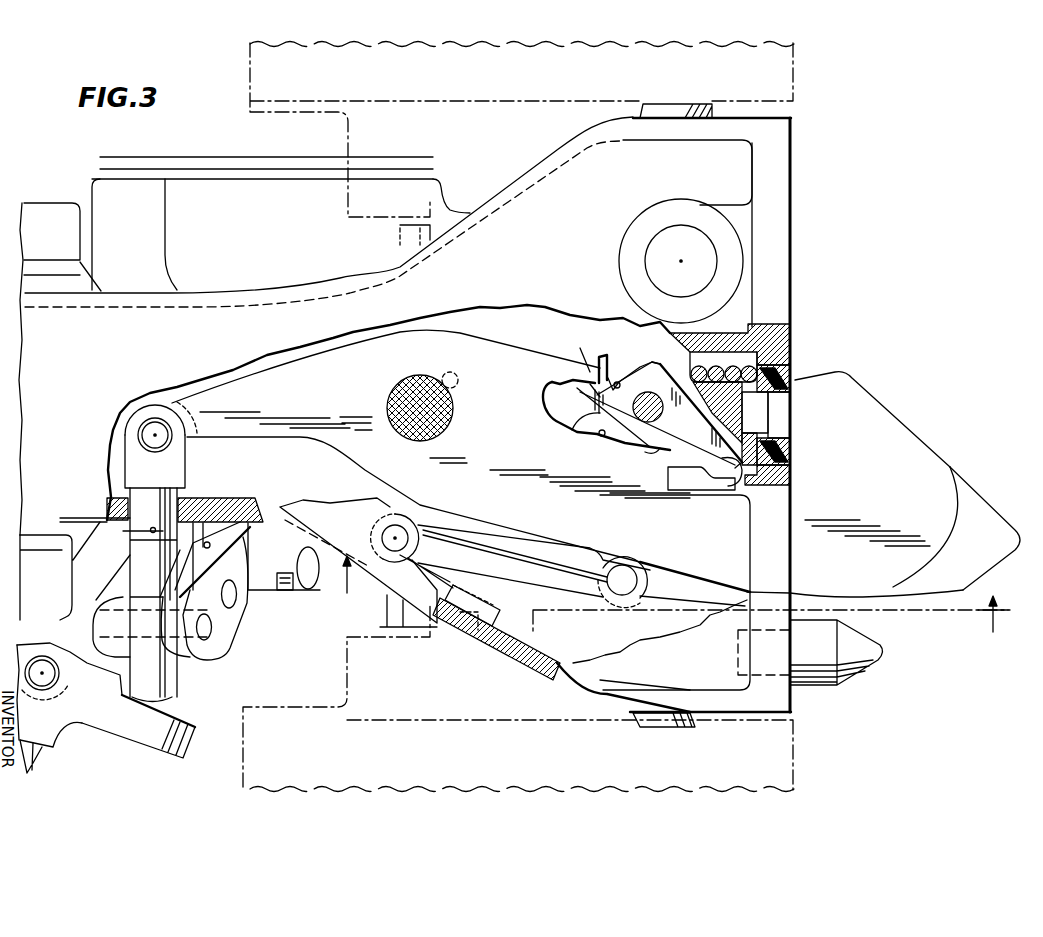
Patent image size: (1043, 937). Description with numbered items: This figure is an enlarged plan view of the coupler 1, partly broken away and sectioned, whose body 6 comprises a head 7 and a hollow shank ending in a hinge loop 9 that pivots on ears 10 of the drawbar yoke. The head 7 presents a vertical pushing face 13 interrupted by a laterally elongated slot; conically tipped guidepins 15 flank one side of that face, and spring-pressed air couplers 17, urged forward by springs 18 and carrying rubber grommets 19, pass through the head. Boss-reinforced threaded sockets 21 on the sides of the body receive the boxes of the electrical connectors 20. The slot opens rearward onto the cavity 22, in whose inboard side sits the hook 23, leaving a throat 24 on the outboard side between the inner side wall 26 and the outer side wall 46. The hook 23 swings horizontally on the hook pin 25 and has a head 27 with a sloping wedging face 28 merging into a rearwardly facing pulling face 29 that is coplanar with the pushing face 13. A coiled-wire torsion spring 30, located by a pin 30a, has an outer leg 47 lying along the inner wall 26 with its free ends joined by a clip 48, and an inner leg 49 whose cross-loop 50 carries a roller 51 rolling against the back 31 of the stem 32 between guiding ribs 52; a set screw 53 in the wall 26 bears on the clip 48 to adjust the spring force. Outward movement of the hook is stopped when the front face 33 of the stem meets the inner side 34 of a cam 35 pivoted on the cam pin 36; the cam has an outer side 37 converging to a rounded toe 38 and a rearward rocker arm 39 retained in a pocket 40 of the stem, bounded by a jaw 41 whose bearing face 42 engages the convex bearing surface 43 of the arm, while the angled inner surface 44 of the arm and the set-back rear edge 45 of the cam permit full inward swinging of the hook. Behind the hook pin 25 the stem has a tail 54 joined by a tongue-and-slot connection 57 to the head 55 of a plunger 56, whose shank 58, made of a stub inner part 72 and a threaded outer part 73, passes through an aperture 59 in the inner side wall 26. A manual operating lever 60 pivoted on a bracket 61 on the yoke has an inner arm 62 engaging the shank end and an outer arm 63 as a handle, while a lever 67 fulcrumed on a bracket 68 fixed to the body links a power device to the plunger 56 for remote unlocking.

The coupler 1 is at (800, 166).
The body 6 is at (672, 596).
The head 7 is at (782, 222).
The hinge loop 9 is at (25, 280).
The ears 10 is at (58, 203).
The pushing face 13 is at (790, 288).
The guidepins 15 is at (867, 665).
The air couplers 17 is at (790, 372).
The springs 18 is at (712, 381).
The rubber grommets 19 is at (790, 397).
The electrical connectors 20 is at (809, 748).
The threaded sockets 21 is at (673, 720).
The cavity 22 is at (580, 631).
The hook 23 is at (922, 441).
The throat 24 is at (542, 331).
The hook pin 25 is at (388, 395).
The inner side wall 26 is at (553, 660).
The hook head 27 is at (868, 497).
The wedging face 28 is at (952, 467).
The pulling face 29 is at (796, 422).
The hook spring 30 is at (468, 522).
The pin 30a is at (379, 530).
The back of stem 31 is at (523, 528).
The stem 32 is at (510, 437).
The front face 33 is at (603, 436).
The inner side of cam 34 is at (657, 428).
The cam 35 is at (695, 441).
The cam pin 36 is at (652, 412).
The outer side of cam 37 is at (672, 386).
The toe 38 is at (733, 473).
The rocker arm 39 is at (590, 398).
The pocket 40 is at (552, 382).
The jaw 41 is at (576, 354).
The inner bearing face 42 is at (605, 360).
The outer bearing surface 43 is at (610, 405).
The inner surface of rocker arm 44 is at (583, 429).
The rear edge 45 is at (618, 381).
The outer side wall 46 is at (557, 177).
The outer leg 47 is at (433, 587).
The clip 48 is at (493, 593).
The inner leg 49 is at (493, 545).
The cross-loop 50 is at (627, 596).
The roller 51 is at (641, 586).
The ribs 52 is at (700, 593).
The set screw 53 is at (458, 630).
The tail 54 is at (175, 438).
The plunger head 55 is at (180, 472).
The plunger 56 is at (128, 557).
The tongue-and-slot pivotal connection 57 is at (140, 435).
The plunger shank 58 is at (167, 677).
The aperture 59 is at (197, 498).
The manual operating lever 60 is at (82, 725).
The mounting bracket 61 is at (50, 632).
The inner arm 62 is at (140, 733).
The outer arm 63 is at (40, 757).
The lever 67 is at (235, 622).
The bracket 68 is at (200, 545).
The stub inner part 72 is at (136, 530).
The outer part 73 is at (137, 580).